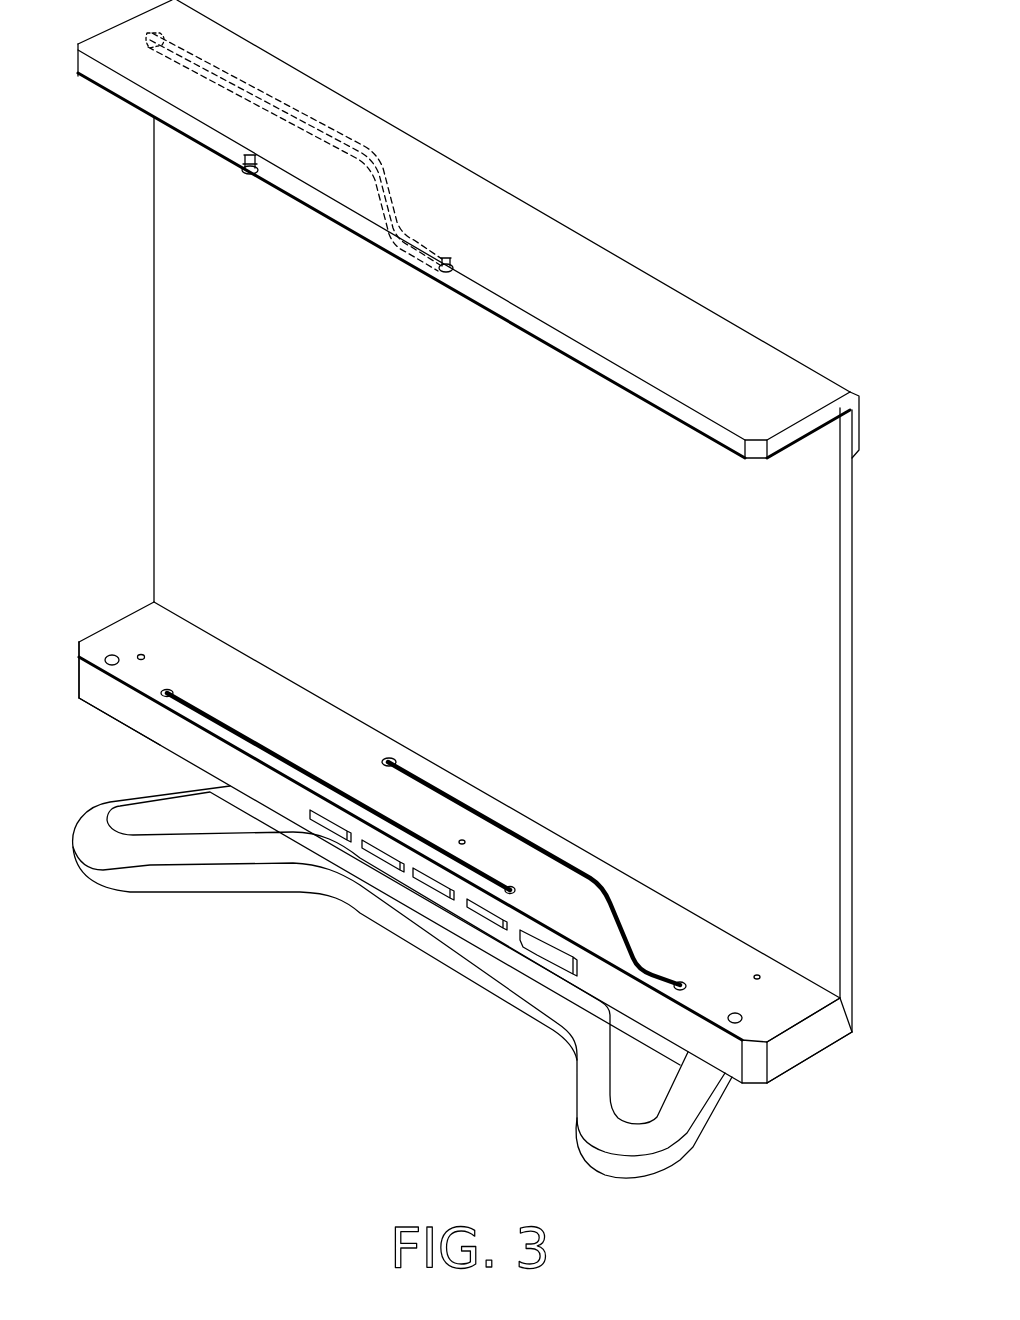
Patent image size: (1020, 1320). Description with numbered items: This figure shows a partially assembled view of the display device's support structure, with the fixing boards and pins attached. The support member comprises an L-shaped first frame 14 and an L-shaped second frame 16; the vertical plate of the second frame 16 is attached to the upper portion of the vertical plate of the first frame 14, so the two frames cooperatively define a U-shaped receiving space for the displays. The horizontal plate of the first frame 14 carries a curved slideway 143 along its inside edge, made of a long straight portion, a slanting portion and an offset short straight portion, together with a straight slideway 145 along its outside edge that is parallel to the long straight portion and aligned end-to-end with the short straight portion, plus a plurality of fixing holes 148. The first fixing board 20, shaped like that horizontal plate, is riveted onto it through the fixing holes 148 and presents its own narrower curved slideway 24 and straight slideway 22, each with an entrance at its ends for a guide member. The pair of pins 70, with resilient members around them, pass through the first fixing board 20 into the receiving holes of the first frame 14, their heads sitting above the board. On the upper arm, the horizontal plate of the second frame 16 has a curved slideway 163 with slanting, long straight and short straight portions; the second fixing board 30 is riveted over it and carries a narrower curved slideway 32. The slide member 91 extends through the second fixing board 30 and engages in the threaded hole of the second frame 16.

The first frame 14 is at (805, 655).
The second frame 16 is at (595, 292).
The first fixing board 20 is at (800, 988).
The straight slideway 22 is at (155, 697).
The curved slideway 24 is at (585, 852).
The second fixing board 30 is at (800, 440).
The curved slideway 32 is at (148, 50).
The pins 70 is at (106, 656).
The slide member 91 is at (240, 168).
The curved slideway 143 is at (623, 930).
The straight slideway 145 is at (193, 710).
The fixing holes 148 is at (141, 653).
The curved slideway 163 is at (203, 60).